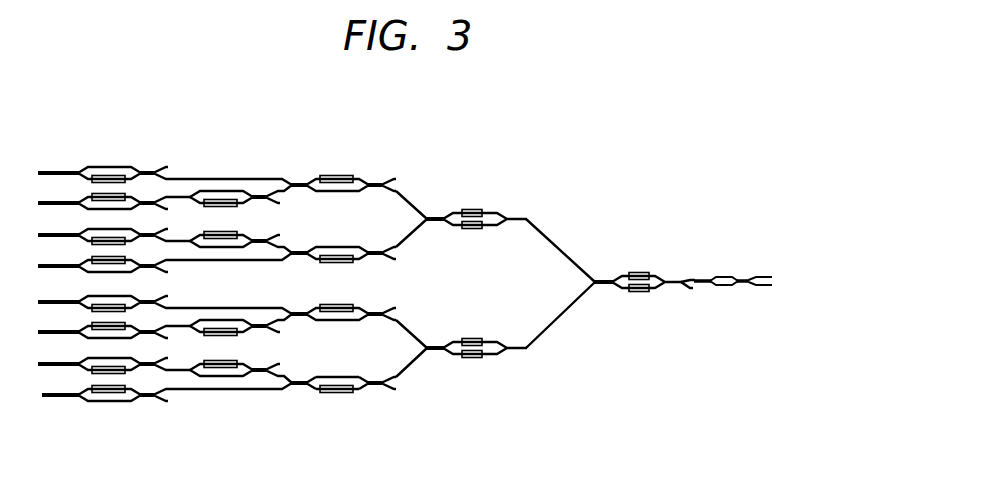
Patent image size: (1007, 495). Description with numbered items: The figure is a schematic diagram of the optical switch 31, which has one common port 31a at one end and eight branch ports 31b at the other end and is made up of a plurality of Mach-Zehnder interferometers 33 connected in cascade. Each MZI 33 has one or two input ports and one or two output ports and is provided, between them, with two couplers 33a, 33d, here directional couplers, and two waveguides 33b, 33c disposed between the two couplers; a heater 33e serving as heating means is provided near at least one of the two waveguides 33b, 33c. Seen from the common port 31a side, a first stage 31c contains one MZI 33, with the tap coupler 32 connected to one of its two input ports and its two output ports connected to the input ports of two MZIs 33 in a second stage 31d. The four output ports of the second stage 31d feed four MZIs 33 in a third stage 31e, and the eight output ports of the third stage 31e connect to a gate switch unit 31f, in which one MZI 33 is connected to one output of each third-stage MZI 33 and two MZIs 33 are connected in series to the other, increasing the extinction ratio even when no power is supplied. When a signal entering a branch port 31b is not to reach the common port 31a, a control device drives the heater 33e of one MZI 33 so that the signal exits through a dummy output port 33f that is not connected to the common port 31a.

The optical switch 31 is at (38, 113).
The common port 31a is at (688, 278).
The branch ports 31b is at (43, 405).
The first stage 31c is at (688, 157).
The second stage 31d is at (423, 157).
The third stage 31e is at (290, 157).
The gate switch unit 31f is at (255, 157).
The tap coupler 32 is at (725, 276).
The Mach-Zehnder interferometer 33 is at (330, 397).
The coupler 33a is at (292, 391).
The waveguide 33b is at (335, 377).
The waveguide 33c is at (314, 393).
The coupler 33d is at (375, 390).
The heater 33e is at (338, 396).
The dummy output port 33f is at (402, 388).